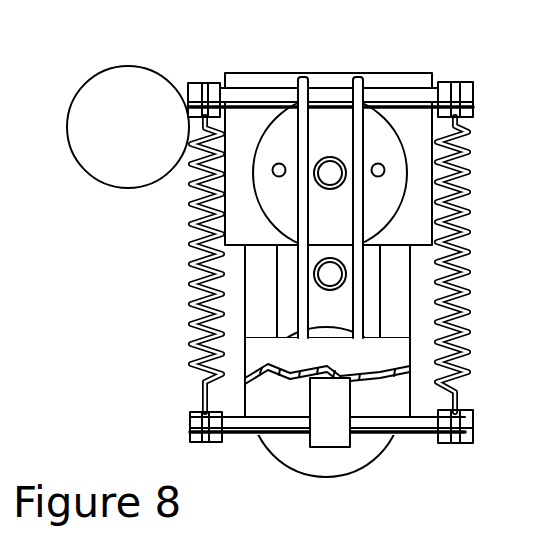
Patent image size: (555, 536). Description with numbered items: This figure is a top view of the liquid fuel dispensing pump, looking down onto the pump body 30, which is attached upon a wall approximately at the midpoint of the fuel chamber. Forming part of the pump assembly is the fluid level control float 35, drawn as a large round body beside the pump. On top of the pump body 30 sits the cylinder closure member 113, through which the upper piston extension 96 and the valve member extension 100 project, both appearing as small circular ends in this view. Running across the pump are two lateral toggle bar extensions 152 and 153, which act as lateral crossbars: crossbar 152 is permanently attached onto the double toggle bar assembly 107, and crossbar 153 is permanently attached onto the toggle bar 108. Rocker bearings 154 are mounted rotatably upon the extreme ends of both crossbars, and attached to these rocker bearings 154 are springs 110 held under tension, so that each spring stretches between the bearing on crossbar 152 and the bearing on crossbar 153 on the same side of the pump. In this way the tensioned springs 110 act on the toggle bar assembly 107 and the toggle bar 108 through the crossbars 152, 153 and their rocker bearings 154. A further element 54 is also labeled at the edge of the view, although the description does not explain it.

The pump body 30 is at (310, 458).
The fluid level control float 35 is at (100, 85).
The frame 54 is at (550, 340).
The upper piston extension 96 is at (320, 175).
The valve member extension 100 is at (323, 273).
The double toggle bar assembly 107 is at (357, 84).
The toggle bar 108 is at (327, 317).
The springs 110 is at (194, 351).
The cylinder closure member 113 is at (383, 193).
The lateral toggle bar extension 152 is at (400, 93).
The lateral toggle bar extension 153 is at (250, 425).
The rocker bearings 154 is at (197, 92).